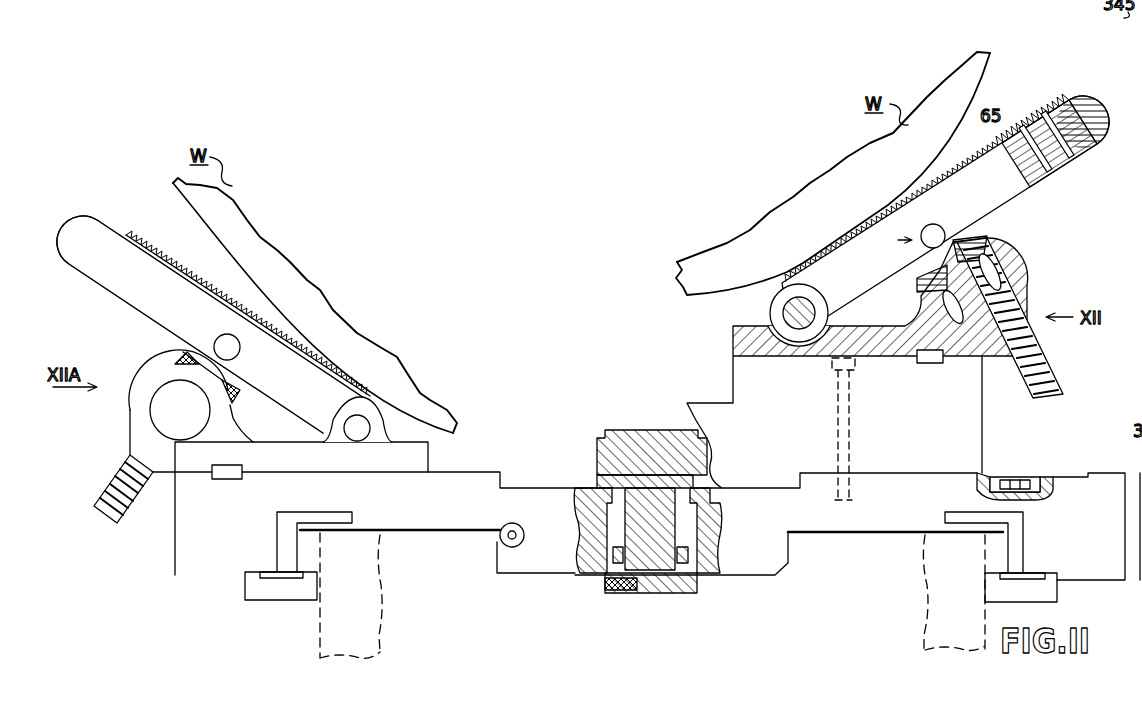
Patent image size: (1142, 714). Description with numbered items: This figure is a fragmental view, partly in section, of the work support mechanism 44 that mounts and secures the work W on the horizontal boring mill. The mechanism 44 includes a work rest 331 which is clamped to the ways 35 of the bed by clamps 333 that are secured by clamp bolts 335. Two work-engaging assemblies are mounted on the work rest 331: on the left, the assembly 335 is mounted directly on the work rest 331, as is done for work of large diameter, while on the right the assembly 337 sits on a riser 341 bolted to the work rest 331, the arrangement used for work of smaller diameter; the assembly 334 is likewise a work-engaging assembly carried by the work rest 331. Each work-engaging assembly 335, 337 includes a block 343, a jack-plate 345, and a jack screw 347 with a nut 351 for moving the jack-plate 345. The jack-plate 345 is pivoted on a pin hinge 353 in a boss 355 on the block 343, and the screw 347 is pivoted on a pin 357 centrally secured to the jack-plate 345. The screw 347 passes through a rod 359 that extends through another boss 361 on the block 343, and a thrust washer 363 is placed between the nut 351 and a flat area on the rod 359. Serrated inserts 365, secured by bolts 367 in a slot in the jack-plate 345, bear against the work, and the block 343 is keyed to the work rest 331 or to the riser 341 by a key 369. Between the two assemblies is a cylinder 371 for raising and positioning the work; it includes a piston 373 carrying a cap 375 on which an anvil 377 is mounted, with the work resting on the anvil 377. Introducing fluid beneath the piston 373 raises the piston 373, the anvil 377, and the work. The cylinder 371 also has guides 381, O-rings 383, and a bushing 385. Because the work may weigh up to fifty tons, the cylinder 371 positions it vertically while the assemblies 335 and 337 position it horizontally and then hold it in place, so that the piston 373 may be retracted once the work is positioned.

The work rest 331 is at (829, 552).
The clamps 333 is at (255, 589).
The work-engaging assembly 334 is at (1013, 482).
The clamp bolts / work-engaging assembly 335 is at (140, 348).
The work-engaging assembly 337 is at (1014, 219).
The riser 341 is at (977, 422).
The block 343 is at (418, 454).
The jack-plate 345 is at (86, 222).
The jack screw 347 is at (118, 486).
The nut 351 is at (172, 358).
The pin hinge 353 is at (357, 426).
The boss 355 is at (343, 405).
The pin 357 is at (233, 352).
The rod 359 is at (158, 410).
The boss 361 is at (224, 416).
The thrust washer 363 is at (980, 262).
The serrated inserts 365 is at (158, 247).
The bolts 367 is at (1060, 163).
The key 369 is at (233, 478).
The cylinder 371 is at (659, 511).
The piston 373 is at (668, 512).
The cap 375 is at (606, 481).
The anvil 377 is at (604, 450).
The guides 381 is at (673, 588).
The O-rings 383 is at (683, 556).
The bushing 385 is at (647, 430).
The ways 35 is at (381, 588).
The work support mechanism 44 is at (513, 586).